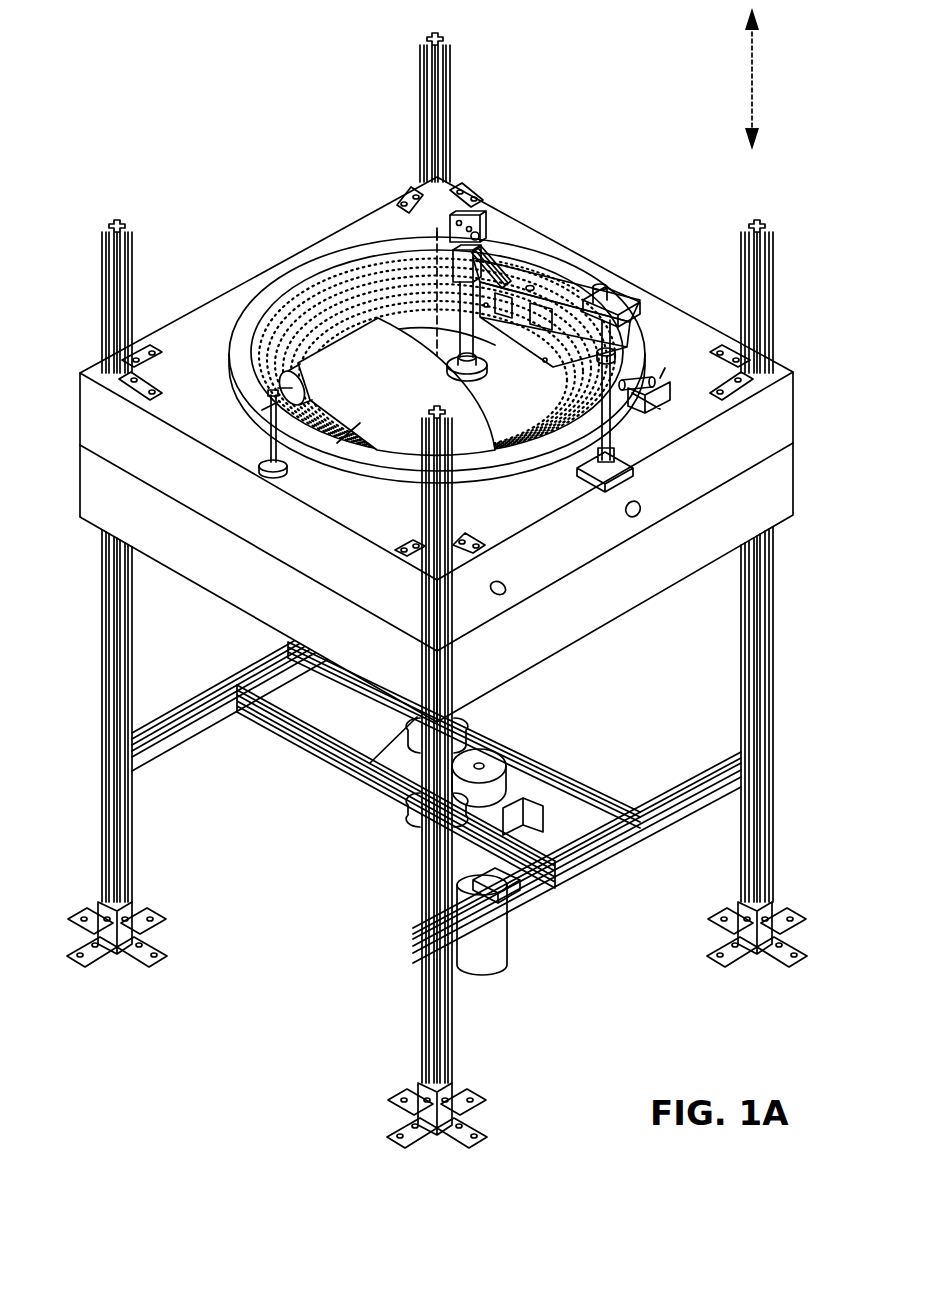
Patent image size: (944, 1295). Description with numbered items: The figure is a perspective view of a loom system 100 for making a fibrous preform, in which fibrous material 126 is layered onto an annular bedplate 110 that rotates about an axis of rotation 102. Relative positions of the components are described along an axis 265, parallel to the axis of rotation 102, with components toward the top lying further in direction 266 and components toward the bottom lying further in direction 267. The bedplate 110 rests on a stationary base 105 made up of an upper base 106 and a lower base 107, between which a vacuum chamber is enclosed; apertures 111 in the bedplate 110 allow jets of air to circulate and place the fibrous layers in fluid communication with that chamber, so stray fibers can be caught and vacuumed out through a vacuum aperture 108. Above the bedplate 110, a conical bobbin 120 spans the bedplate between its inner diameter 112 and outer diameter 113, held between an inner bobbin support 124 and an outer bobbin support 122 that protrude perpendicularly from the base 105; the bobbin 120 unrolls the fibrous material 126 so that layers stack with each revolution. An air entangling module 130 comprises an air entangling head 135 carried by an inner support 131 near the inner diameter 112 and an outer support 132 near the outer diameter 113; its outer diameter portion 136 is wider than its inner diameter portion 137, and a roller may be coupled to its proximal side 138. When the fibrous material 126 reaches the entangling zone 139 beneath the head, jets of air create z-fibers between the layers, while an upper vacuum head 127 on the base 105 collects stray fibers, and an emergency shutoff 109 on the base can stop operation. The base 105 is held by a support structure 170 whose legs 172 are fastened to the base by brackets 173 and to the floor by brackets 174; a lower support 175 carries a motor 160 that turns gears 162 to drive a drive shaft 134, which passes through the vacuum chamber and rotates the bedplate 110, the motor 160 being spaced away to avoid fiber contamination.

The loom system 100 is at (118, 170).
The axis of rotation 102 is at (437, 232).
The base 105 is at (258, 268).
The upper base 106 is at (796, 392).
The lower base 107 is at (789, 523).
The vacuum aperture 108 is at (636, 517).
The emergency shutoff 109 is at (499, 595).
The bedplate 110 is at (377, 272).
The apertures 111 is at (297, 335).
The inner diameter 112 is at (450, 333).
The outer diameter 113 is at (345, 277).
The bobbin 120 is at (302, 355).
The outer bobbin support 122 is at (290, 390).
The inner bobbin support 124 is at (415, 335).
The fibrous material 126 is at (337, 443).
The upper vacuum head 127 is at (667, 405).
The air entangling module 130 is at (565, 298).
The inner support 131 is at (480, 272).
The outer support 132 is at (640, 302).
The drive shaft 134 is at (453, 727).
The air entangling head 135 is at (560, 370).
The outer diameter portion 136 is at (603, 484).
The inner diameter portion 137 is at (480, 307).
The proximal side 138 is at (540, 375).
The entangling zone 139 is at (510, 398).
The motor 160 is at (480, 890).
The gears 162 is at (490, 758).
The support structure 170 is at (393, 892).
The legs 172 is at (104, 700).
The brackets 173 is at (131, 393).
The brackets 174 is at (138, 955).
The lower support 175 is at (605, 778).
The axis 265 is at (752, 85).
The direction 266 is at (760, 20).
The direction 267 is at (760, 135).